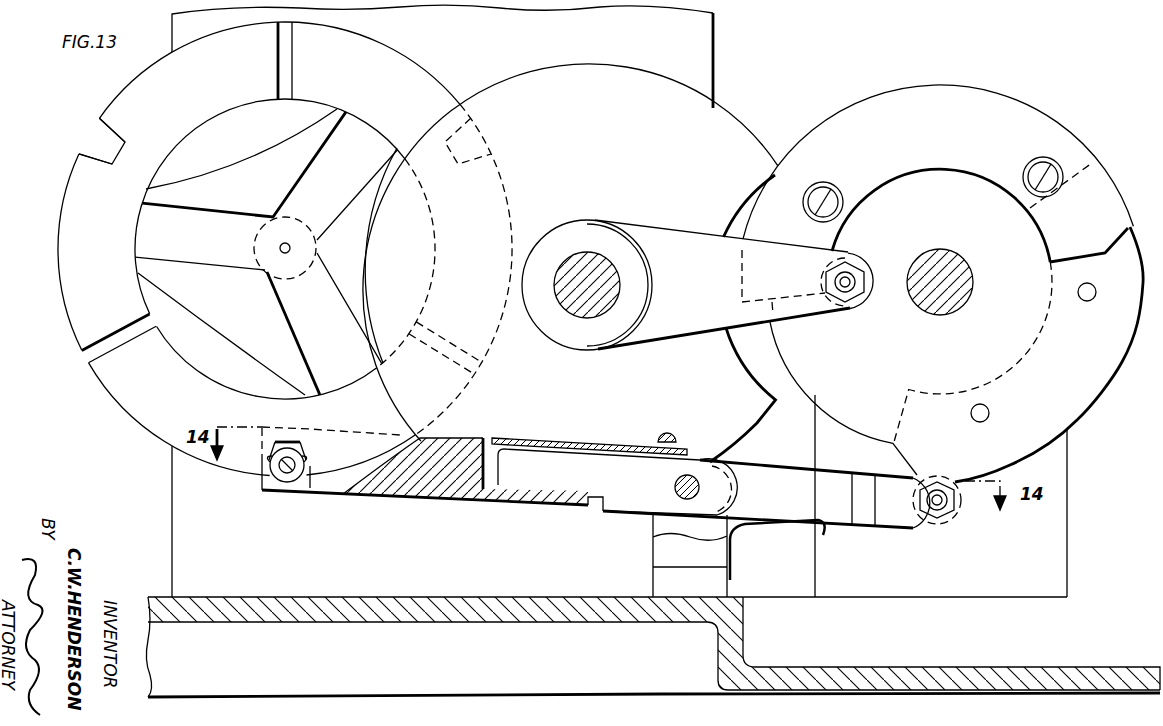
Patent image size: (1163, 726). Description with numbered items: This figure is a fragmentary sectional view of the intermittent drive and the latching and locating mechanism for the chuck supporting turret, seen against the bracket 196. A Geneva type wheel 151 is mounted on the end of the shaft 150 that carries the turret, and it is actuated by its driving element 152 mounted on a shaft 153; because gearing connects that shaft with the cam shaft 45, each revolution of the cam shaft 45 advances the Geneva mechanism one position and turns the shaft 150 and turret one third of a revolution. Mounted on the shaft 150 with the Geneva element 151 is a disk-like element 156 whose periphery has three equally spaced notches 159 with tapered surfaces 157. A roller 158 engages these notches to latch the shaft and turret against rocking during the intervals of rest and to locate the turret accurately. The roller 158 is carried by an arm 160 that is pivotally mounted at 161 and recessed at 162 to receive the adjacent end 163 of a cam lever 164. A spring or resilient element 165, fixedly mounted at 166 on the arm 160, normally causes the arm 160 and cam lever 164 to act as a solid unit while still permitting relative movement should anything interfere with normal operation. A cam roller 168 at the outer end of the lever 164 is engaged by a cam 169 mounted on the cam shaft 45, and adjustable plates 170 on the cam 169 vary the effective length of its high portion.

The cam shaft 45 is at (948, 310).
The shaft 150 is at (300, 228).
The Geneva type wheel 151 is at (136, 280).
The driving element 152 is at (748, 142).
The shaft 153 is at (578, 262).
The disk-like element 156 is at (62, 264).
The tapered surfaces 157 is at (85, 150).
The roller 158 is at (290, 480).
The notches 159 is at (100, 136).
The arm 160 is at (428, 494).
The pivot 161 is at (675, 489).
The recess 162 is at (493, 486).
The adjacent end of cam lever 163 is at (566, 452).
The cam lever 164 is at (884, 515).
The spring or resilient element 165 is at (522, 445).
The mounting point of spring 166 is at (672, 440).
The cam roller 168 is at (912, 524).
The cam 169 is at (1098, 392).
The adjustable plates 170 is at (1052, 138).
The bracket 196 is at (713, 80).